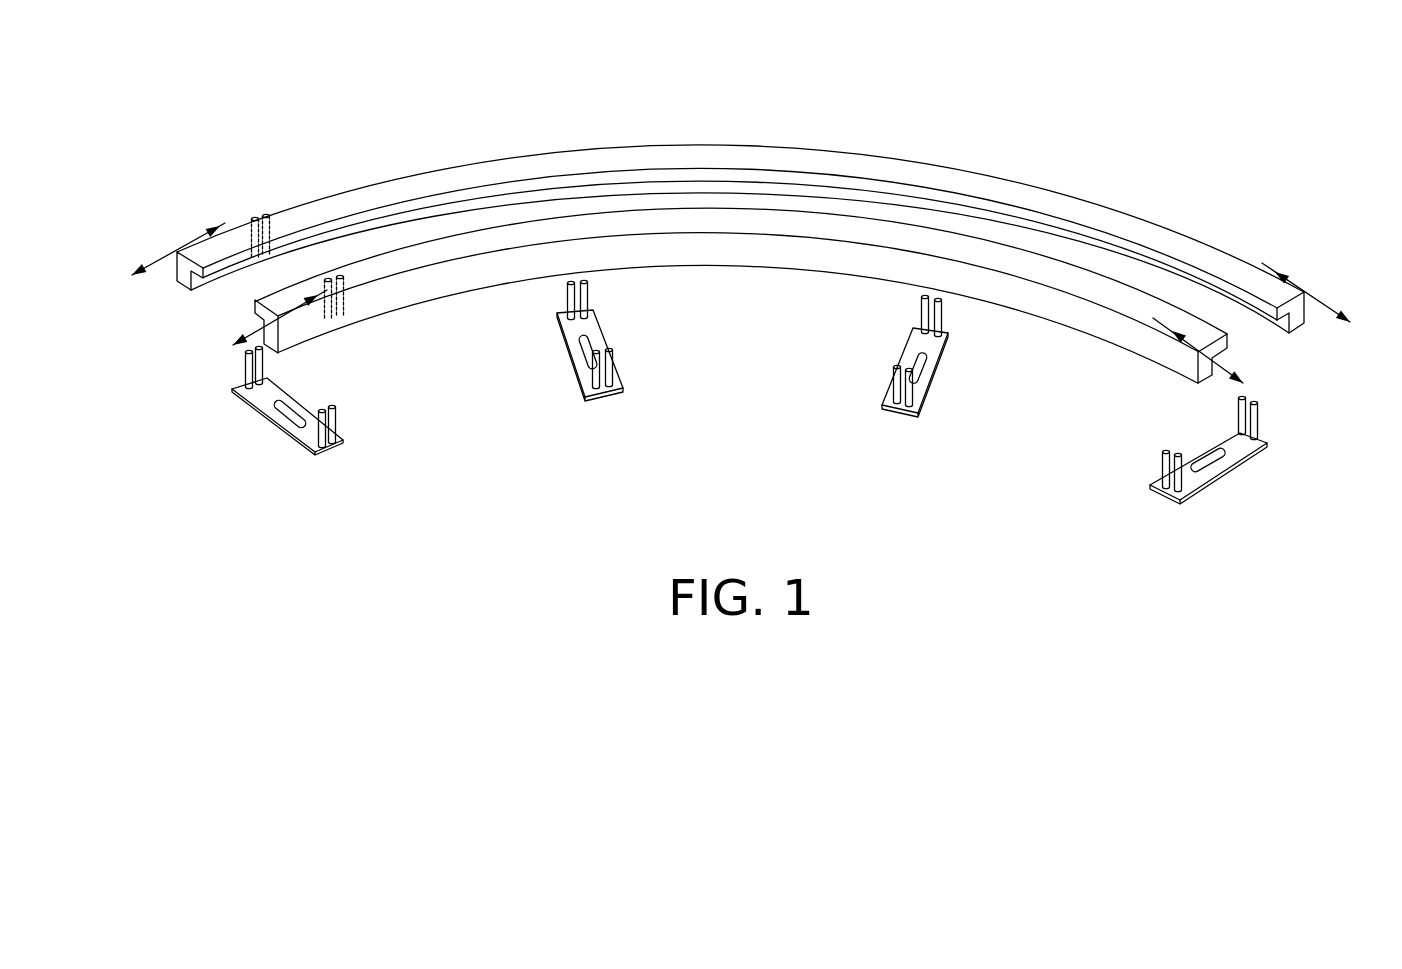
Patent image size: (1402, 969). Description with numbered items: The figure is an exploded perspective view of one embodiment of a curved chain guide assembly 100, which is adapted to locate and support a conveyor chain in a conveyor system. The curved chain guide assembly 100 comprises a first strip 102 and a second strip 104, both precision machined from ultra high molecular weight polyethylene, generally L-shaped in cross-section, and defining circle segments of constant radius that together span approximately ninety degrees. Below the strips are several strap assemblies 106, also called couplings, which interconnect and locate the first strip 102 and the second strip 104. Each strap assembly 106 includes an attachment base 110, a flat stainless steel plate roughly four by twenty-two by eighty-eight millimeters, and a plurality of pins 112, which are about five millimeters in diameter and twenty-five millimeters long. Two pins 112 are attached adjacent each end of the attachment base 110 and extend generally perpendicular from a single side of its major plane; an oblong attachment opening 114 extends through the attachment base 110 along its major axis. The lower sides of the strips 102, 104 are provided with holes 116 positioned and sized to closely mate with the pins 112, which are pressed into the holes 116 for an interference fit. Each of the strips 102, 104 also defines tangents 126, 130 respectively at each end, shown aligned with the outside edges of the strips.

The curved chain guide assembly 100 is at (1103, 66).
The first strip 102 is at (1060, 204).
The second strip 104 is at (1112, 329).
The strap assembly 106 is at (269, 426).
The attachment base 110 is at (333, 455).
The pins 112 is at (340, 407).
The oblong attachment opening 114 is at (276, 417).
The holes 116 is at (271, 224).
The tangent 126 is at (158, 266).
The tangent 130 is at (255, 332).